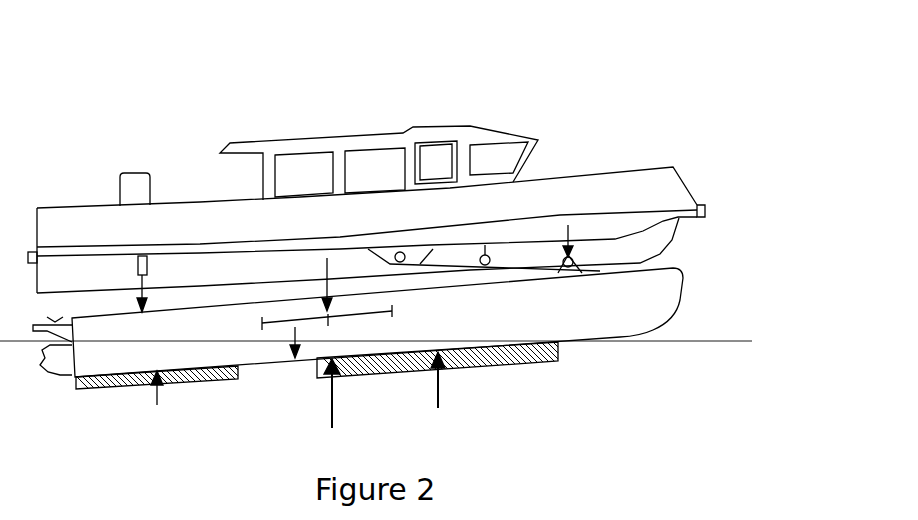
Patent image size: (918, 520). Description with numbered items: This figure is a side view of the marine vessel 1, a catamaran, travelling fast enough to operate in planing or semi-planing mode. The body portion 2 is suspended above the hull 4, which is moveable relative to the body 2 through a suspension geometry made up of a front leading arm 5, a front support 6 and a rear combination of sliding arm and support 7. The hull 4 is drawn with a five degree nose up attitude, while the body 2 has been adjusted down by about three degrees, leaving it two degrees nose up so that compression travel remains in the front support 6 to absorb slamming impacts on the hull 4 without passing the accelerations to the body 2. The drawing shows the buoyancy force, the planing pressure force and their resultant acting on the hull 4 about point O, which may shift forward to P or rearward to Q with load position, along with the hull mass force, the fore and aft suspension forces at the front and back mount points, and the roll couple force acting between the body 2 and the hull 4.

The marine vessel 1 is at (156, 82).
The body portion 2 is at (613, 182).
The hull 4 is at (590, 323).
The front leading arm 5 is at (513, 263).
The front support 6 is at (485, 246).
The rear combination of sliding arm and support 7 is at (145, 283).